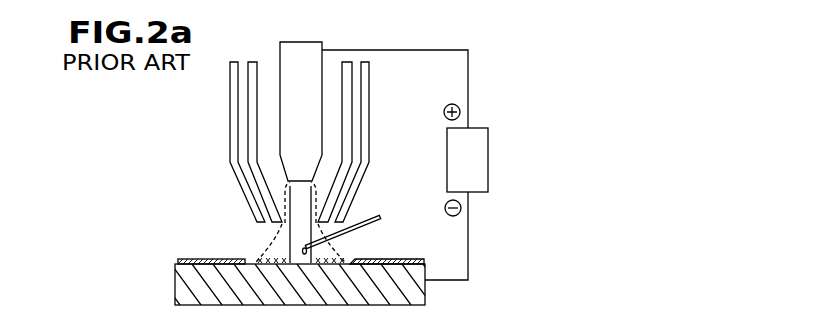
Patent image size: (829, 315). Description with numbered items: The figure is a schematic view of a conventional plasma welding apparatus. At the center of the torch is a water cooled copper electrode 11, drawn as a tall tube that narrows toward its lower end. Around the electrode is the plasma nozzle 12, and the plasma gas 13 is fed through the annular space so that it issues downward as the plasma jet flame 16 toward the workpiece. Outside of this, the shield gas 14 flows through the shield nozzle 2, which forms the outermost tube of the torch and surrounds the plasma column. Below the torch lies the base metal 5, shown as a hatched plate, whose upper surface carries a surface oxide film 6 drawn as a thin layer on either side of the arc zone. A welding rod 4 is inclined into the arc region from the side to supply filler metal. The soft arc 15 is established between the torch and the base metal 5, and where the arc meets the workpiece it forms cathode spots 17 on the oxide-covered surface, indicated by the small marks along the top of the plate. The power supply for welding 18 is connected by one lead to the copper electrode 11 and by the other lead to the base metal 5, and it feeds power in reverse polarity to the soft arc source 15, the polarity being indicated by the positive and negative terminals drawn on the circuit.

The shield nozzle 2 is at (370, 80).
The welding rod 4 is at (373, 213).
The base metal 5 is at (180, 276).
The surface oxide film 6 is at (198, 260).
The water cooled copper electrode 11 is at (298, 67).
The plasma nozzle 12 is at (345, 66).
The plasma gas 13 is at (267, 67).
The shield gas 14 is at (243, 62).
The soft arc 15 is at (268, 242).
The plasma jet flame 16 is at (292, 221).
The cathode spots 17 is at (347, 257).
The power supply for welding 18 is at (475, 155).